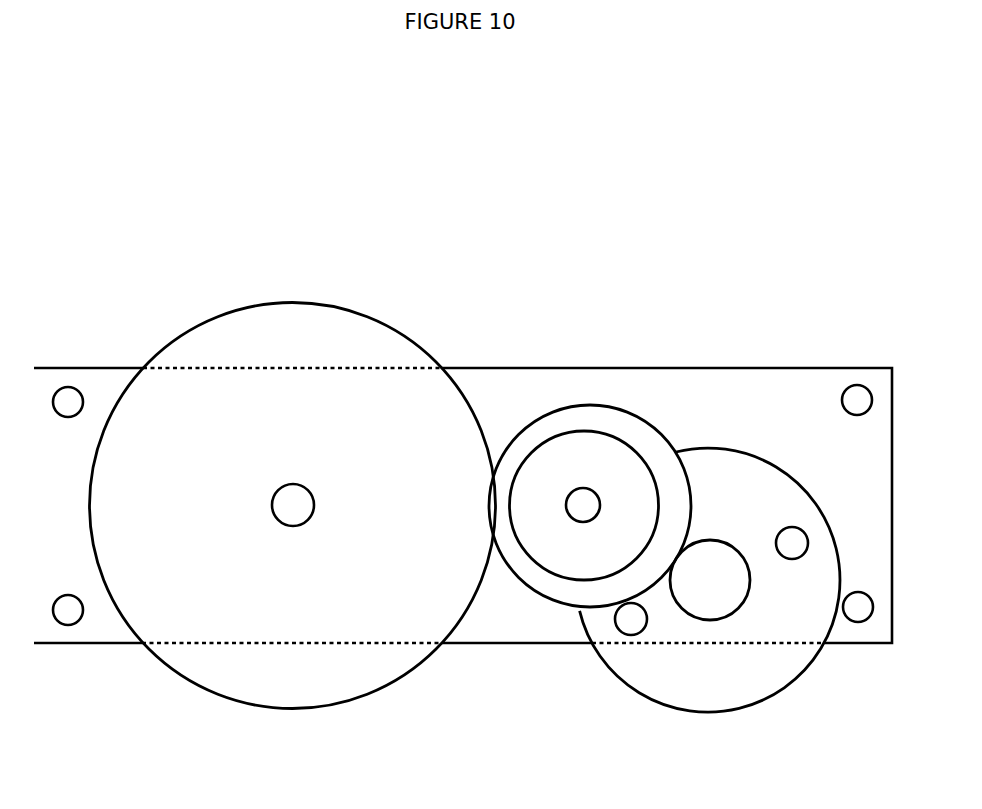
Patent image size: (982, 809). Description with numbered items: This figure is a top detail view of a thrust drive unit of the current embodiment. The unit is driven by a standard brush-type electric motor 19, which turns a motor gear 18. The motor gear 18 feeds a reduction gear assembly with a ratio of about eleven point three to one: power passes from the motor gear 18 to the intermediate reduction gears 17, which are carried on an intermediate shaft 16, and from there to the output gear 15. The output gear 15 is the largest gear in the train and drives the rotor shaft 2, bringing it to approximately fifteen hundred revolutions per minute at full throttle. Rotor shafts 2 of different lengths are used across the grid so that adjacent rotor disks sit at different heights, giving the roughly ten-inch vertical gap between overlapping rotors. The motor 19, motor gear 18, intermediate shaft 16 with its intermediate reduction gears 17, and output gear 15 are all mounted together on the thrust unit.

The rotor shaft 2 is at (292, 503).
The output gear 15 is at (207, 355).
The intermediate shaft 16 is at (582, 507).
The intermediate reduction gears 17 is at (559, 543).
The motor gear 18 is at (712, 578).
The electric motor 19 is at (728, 682).